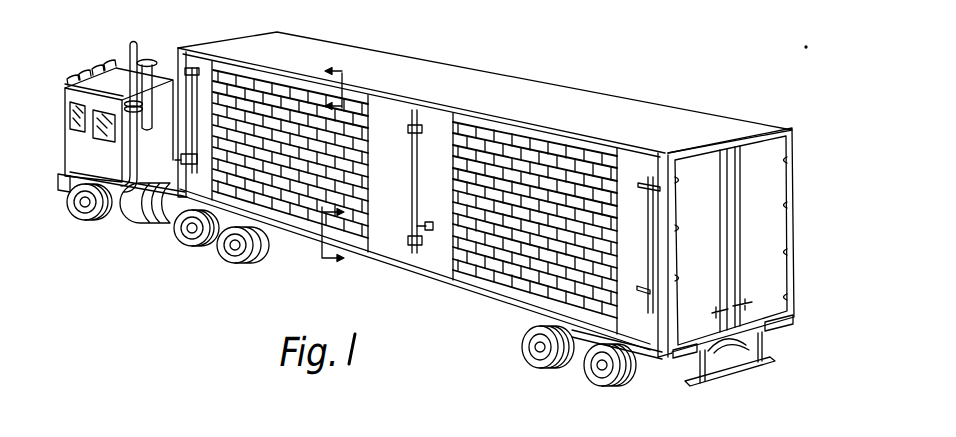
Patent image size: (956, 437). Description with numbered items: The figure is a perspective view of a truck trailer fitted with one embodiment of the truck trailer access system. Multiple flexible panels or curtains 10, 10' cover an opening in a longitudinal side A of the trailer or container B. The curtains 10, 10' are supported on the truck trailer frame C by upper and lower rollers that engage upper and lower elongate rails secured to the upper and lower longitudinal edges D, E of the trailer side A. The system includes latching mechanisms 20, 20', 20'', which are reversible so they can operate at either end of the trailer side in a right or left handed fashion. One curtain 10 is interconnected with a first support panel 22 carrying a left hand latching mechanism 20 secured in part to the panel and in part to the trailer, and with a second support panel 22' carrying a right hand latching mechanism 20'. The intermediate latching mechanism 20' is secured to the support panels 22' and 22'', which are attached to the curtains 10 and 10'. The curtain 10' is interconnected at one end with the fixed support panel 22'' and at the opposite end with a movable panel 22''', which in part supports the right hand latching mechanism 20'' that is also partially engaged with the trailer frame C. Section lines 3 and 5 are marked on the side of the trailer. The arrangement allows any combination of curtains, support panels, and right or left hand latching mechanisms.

The longitudinal side A is at (287, 255).
The trailer B is at (275, 40).
The truck trailer frame C is at (667, 358).
The upper longitudinal edge D is at (528, 127).
The lower longitudinal edge E is at (493, 290).
The section line 3- 3 is at (336, 88).
The section line 5- 5 is at (330, 232).
The curtain 10 is at (524, 231).
The curtain 10' is at (318, 127).
The latching mechanism 20 is at (666, 196).
The intermediate latching mechanism 20' is at (457, 147).
The latching mechanism 20'' is at (182, 86).
The first support panel 22 is at (595, 284).
The second support panel 22' is at (434, 213).
The fixed support panel 22'' is at (367, 196).
The movable panel 22''' is at (157, 163).